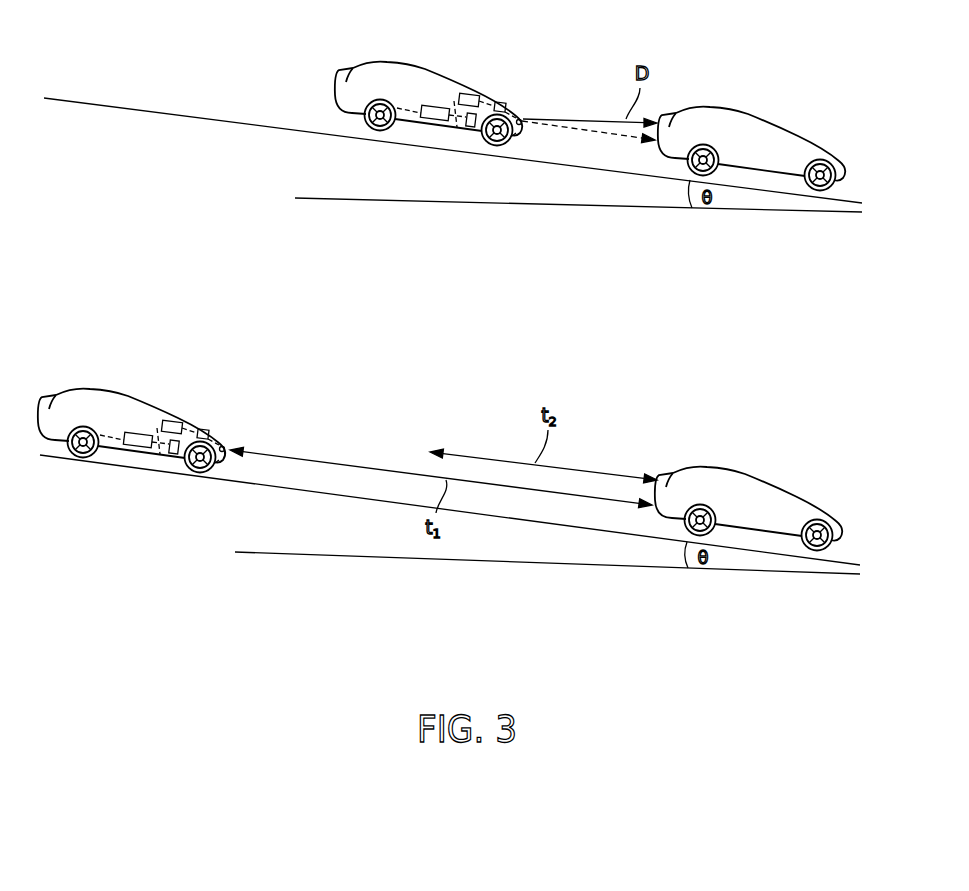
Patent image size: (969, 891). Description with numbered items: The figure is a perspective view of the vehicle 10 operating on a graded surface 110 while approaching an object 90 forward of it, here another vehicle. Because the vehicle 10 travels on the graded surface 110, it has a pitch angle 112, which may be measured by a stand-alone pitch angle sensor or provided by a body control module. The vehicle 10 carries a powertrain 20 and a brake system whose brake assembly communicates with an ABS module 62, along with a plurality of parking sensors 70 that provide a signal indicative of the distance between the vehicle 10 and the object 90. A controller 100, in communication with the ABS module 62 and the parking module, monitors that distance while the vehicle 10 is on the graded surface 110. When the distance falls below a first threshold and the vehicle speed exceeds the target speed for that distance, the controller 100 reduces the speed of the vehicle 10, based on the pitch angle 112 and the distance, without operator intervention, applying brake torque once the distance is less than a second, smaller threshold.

The vehicle 10 is at (434, 64).
The powertrain 20 is at (427, 88).
The ABS module 62 is at (468, 128).
The parking sensors 70 is at (517, 136).
The object 90 is at (772, 112).
The controller 100 is at (469, 93).
The graded surface 110 is at (85, 99).
The pitch angle 112 is at (577, 124).